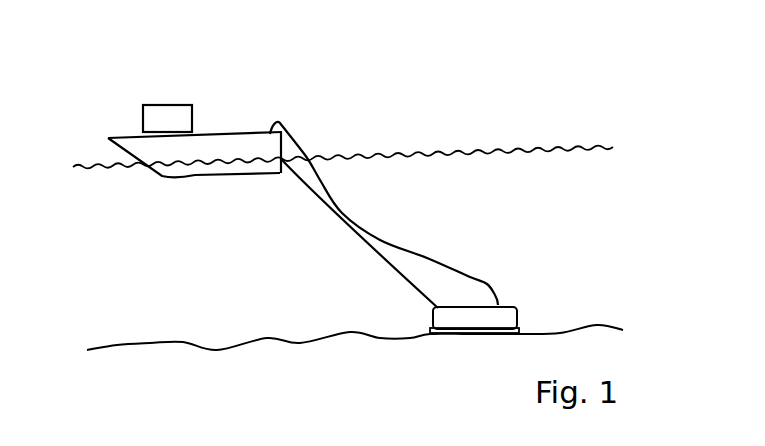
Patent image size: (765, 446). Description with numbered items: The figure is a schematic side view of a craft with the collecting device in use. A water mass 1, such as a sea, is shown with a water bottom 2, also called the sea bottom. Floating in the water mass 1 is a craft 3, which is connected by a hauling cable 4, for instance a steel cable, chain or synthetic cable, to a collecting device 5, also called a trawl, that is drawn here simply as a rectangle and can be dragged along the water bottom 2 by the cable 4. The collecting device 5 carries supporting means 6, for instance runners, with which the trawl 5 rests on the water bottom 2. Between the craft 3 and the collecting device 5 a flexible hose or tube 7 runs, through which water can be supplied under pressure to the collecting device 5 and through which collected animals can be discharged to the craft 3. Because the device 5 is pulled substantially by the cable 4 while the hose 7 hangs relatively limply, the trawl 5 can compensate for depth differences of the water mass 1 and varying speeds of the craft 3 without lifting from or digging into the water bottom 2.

The water mass 1 is at (517, 180).
The water bottom 2 is at (605, 318).
The craft 3 is at (228, 112).
The hauling cable 4 is at (340, 219).
The collecting device 5 is at (527, 293).
The supporting means 6 is at (430, 318).
The flexible hose or tube 7 is at (392, 242).